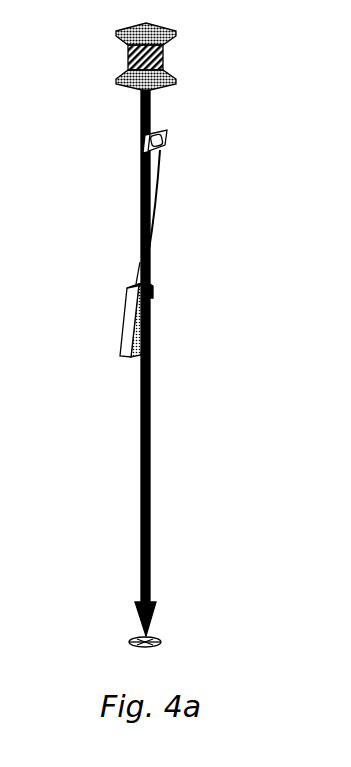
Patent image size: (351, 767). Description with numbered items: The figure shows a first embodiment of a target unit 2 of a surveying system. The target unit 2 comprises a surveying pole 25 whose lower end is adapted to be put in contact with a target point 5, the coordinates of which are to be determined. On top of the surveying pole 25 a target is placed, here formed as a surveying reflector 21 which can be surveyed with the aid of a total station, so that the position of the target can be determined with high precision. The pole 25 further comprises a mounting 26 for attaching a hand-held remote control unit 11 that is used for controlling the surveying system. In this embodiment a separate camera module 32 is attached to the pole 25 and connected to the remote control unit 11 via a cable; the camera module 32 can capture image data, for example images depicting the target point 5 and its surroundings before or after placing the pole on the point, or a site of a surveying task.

The target unit 2 is at (161, 328).
The surveying reflector 21 is at (115, 50).
The camera module 32 is at (191, 196).
The hand-held remote control unit 11 is at (106, 309).
The mounting 26 is at (190, 338).
The surveying pole 25 is at (109, 347).
The target point 5 is at (181, 624).